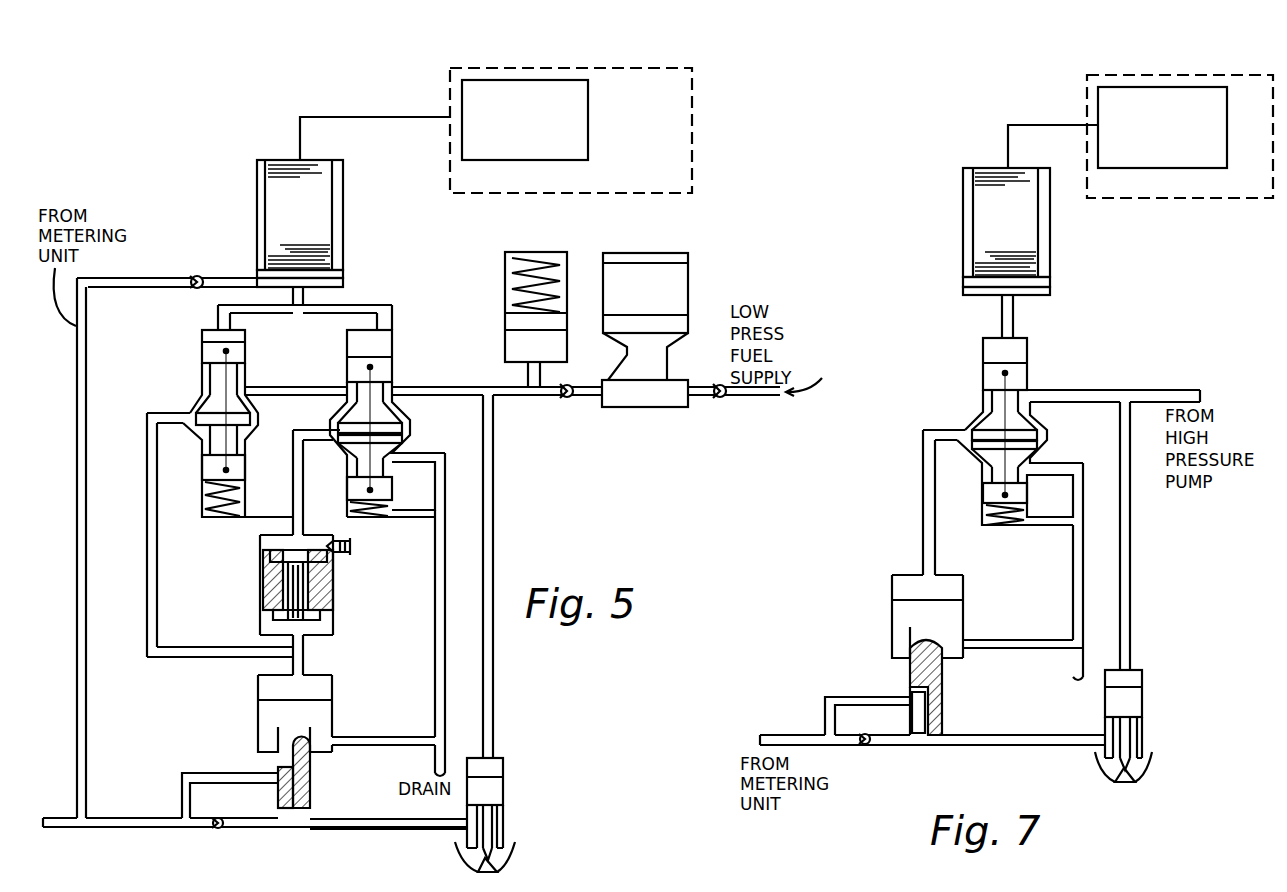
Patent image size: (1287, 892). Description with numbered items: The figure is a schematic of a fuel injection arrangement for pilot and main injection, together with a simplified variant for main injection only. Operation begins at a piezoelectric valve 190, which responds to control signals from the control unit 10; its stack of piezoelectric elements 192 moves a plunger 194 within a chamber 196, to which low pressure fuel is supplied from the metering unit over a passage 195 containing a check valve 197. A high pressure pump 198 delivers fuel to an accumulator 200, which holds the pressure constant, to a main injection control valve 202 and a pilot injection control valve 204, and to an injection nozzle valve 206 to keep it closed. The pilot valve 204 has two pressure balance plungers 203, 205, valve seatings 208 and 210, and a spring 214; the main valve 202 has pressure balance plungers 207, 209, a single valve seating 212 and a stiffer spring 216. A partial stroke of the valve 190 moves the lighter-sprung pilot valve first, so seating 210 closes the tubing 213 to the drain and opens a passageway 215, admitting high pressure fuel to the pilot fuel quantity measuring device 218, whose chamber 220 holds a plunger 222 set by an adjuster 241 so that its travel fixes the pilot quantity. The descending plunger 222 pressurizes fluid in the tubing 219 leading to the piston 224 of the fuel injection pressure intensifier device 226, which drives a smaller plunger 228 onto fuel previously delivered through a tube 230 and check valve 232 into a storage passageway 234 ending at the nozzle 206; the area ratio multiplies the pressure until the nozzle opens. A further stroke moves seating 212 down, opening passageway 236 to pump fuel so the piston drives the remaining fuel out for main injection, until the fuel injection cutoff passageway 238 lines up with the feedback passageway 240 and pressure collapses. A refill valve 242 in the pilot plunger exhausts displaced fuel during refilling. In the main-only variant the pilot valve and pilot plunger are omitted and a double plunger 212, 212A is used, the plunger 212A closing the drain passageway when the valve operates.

In FIG. 5, the control unit 10 is at (692, 106).
In FIG. 7, the control unit 10 is at (1087, 104).
In FIG. 5, the valve 190 is at (343, 184).
In FIG. 7, the valve 190 is at (963, 198).
In FIG. 5, the piezoelectric elements 192 is at (318, 240).
In FIG. 7, the piezoelectric elements 192 is at (995, 258).
In FIG. 5, the plunger 194 is at (344, 276).
In FIG. 7, the plunger 194 is at (1050, 282).
In FIG. 5, the passage 195 is at (150, 286).
In FIG. 5, the chamber 196 is at (345, 285).
In FIG. 7, the chamber 196 is at (1050, 292).
In FIG. 5, the check valve 197 is at (198, 290).
In FIG. 5, the accumulator 200 is at (526, 256).
In FIG. 5, the high pressure pump 198 is at (652, 256).
In FIG. 5, the main injection control valve 202 is at (196, 362).
In FIG. 7, the main injection control valve 202 is at (980, 366).
In FIG. 5, the pressure balance plunger 203 is at (347, 372).
In FIG. 5, the pilot injection control valve 204 is at (396, 362).
In FIG. 5, the pressure balance plunger 205 is at (390, 492).
In FIG. 5, the injection nozzle valve 206 is at (503, 786).
In FIG. 7, the injection nozzle valve 206 is at (1142, 706).
In FIG. 5, the pressure balance plunger 207 is at (240, 355).
In FIG. 5, the valve seating 208 is at (404, 415).
In FIG. 5, the pressure balance plunger 209 is at (240, 473).
In FIG. 7, the pressure balance plunger 209 is at (983, 500).
In FIG. 5, the valve seating 210 is at (404, 442).
In FIG. 5, the valve seating 212 is at (202, 412).
In FIG. 7, the valve seating 212 is at (1038, 424).
In FIG. 7, the plunger 212A is at (1030, 460).
In FIG. 5, the tubing 213 is at (435, 645).
In FIG. 5, the spring 214 is at (372, 512).
In FIG. 5, the passageway 215 is at (303, 496).
In FIG. 5, the spring 216 is at (210, 508).
In FIG. 7, the spring 216 is at (1008, 526).
In FIG. 5, the pilot fuel quantity measuring device 218 is at (260, 590).
In FIG. 5, the tubing 219 is at (303, 672).
In FIG. 5, the chamber 220 is at (333, 627).
In FIG. 5, the plunger 222 is at (333, 615).
In FIG. 5, the piston 224 is at (338, 712).
In FIG. 5, the fuel injection pressure intensifier device 226 is at (258, 708).
In FIG. 7, the fuel injection pressure intensifier device 226 is at (963, 606).
In FIG. 5, the plunger 228 is at (312, 765).
In FIG. 7, the plunger 228 is at (945, 698).
In FIG. 5, the tube 230 is at (155, 830).
In FIG. 7, the tube 230 is at (795, 714).
In FIG. 5, the check valve 232 is at (222, 830).
In FIG. 7, the check valve 232 is at (870, 745).
In FIG. 5, the storage passageway 234 is at (340, 832).
In FIG. 7, the storage passageway 234 is at (993, 747).
In FIG. 5, the passageway 236 is at (147, 514).
In FIG. 7, the passageway 236 is at (923, 488).
In FIG. 5, the fuel injection cutoff passageway 238 is at (310, 790).
In FIG. 5, the feedback passageway 240 is at (218, 772).
In FIG. 7, the feedback passageway 240 is at (875, 694).
In FIG. 5, the adjuster 241 is at (355, 552).
In FIG. 5, the refill valve 242 is at (285, 575).